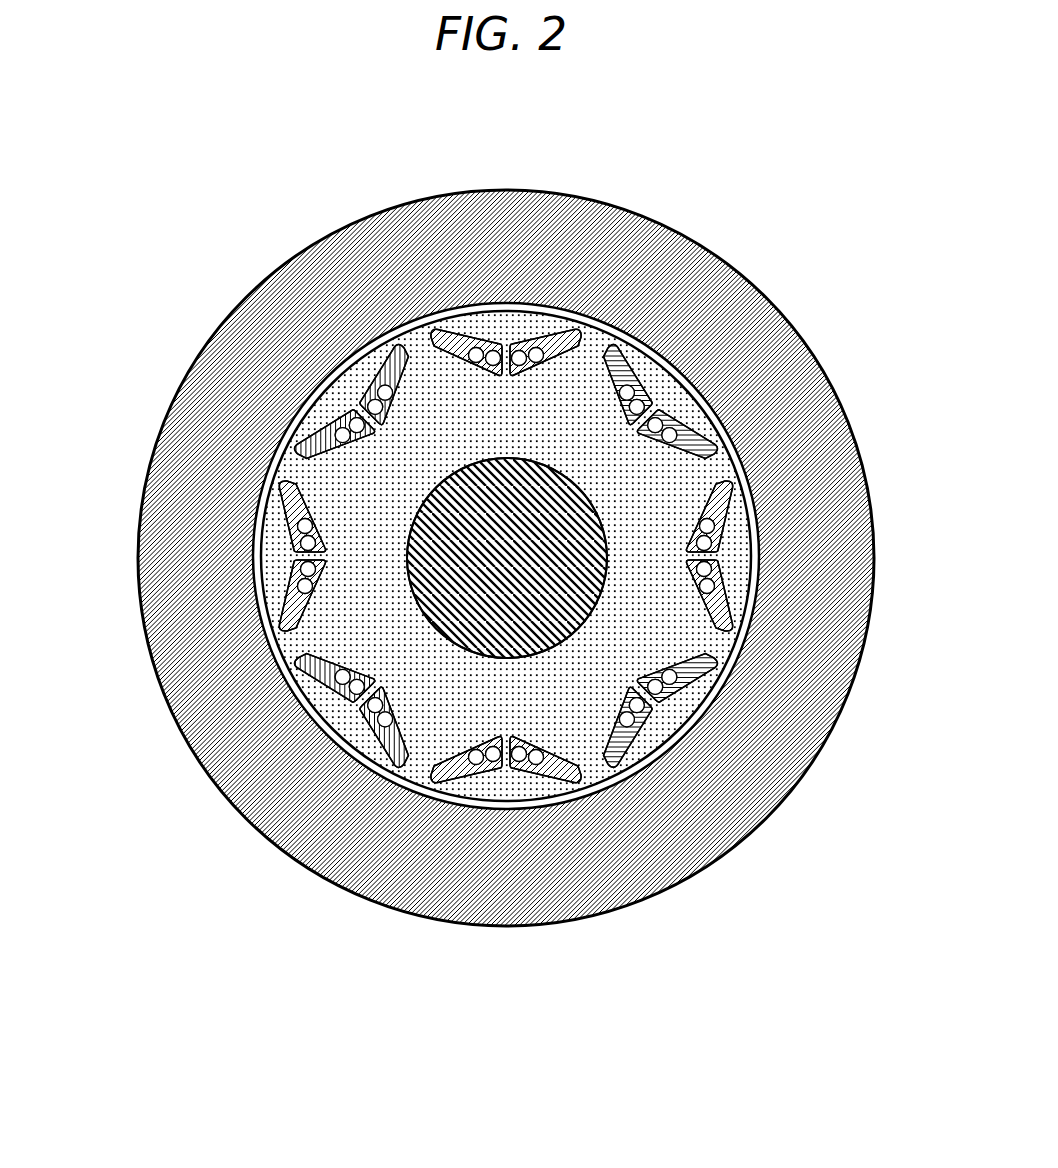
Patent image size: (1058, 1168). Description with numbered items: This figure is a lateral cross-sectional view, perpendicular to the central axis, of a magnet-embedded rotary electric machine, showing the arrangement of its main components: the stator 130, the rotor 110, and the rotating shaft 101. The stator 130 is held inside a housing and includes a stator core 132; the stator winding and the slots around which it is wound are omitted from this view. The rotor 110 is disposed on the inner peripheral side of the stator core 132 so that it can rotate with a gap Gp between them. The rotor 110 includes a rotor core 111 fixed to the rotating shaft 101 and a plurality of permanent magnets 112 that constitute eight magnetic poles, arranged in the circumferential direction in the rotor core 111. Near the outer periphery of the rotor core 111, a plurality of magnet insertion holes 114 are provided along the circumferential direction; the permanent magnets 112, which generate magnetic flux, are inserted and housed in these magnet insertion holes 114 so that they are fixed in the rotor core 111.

The rotating shaft 101 is at (420, 522).
The rotor 110 is at (496, 563).
The rotor core 111 is at (695, 479).
The permanent magnets 112 is at (489, 342).
The magnet insertion holes 114 is at (458, 347).
The stator 130 is at (485, 551).
The stator core 132 is at (203, 377).
The gap Gp is at (593, 327).